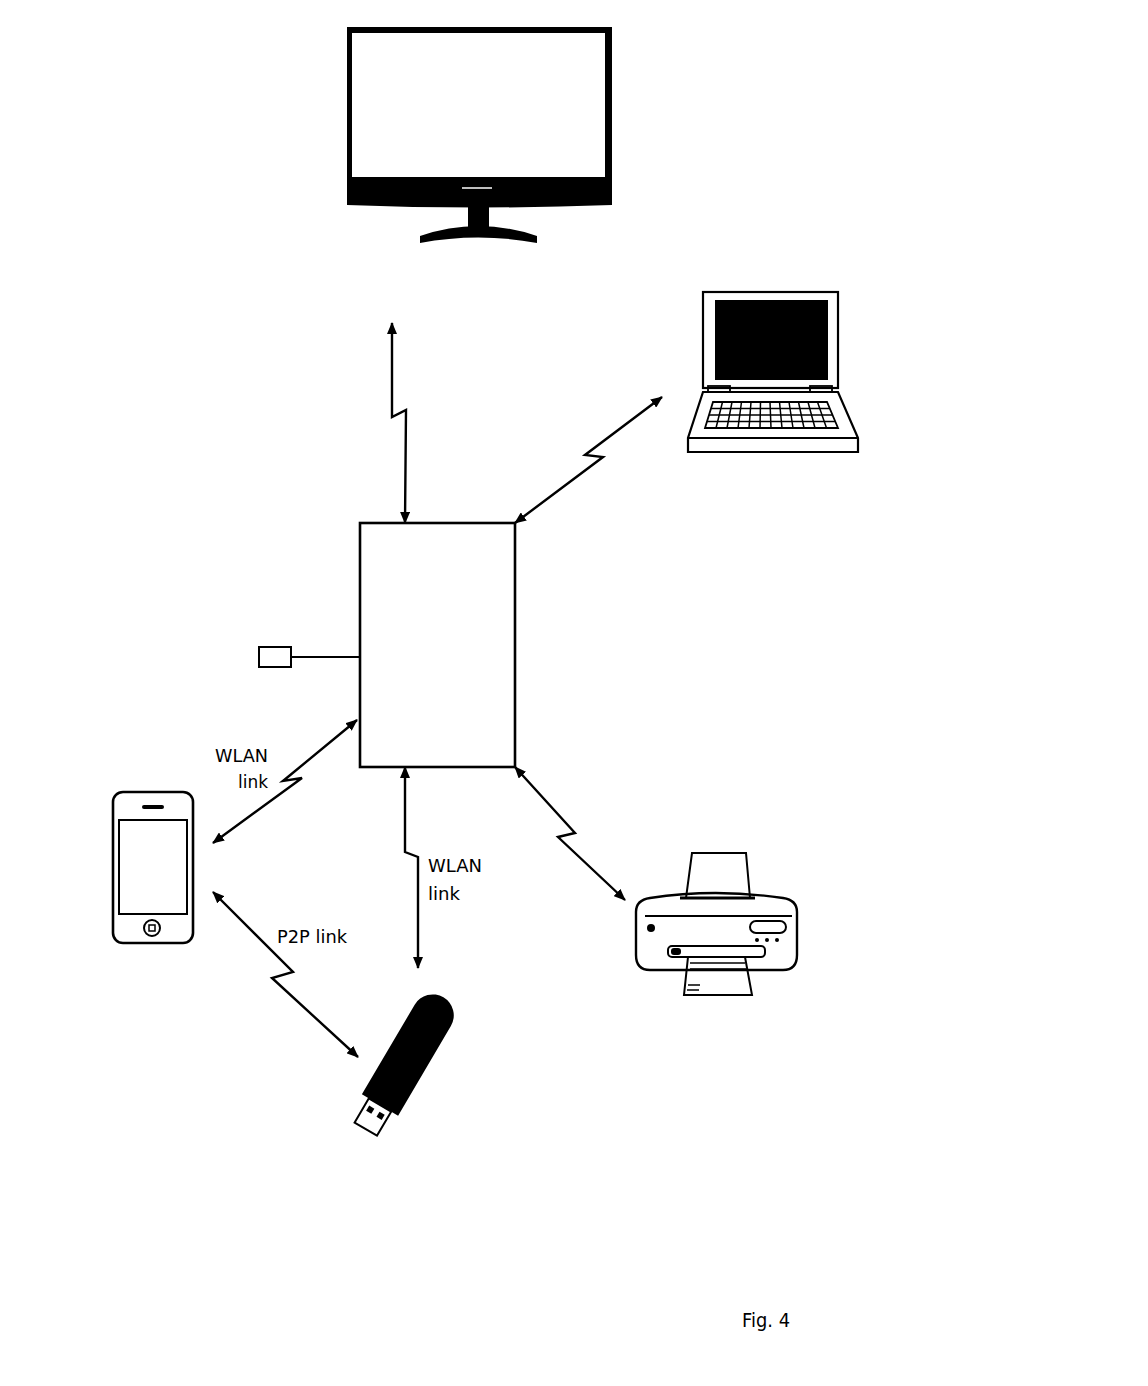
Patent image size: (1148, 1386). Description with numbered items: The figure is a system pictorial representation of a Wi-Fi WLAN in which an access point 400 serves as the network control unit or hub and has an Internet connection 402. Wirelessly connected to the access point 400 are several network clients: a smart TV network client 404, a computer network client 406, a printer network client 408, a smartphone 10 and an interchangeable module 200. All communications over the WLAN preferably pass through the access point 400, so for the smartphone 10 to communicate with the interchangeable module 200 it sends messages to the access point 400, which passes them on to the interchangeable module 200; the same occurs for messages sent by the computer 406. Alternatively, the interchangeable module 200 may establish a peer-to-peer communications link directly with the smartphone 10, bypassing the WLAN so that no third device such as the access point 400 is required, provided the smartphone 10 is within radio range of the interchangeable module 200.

The smartphone 10 is at (135, 790).
The interchangeable module 200 is at (455, 987).
The access point 400 is at (362, 522).
The Internet connection 402 is at (259, 667).
The network client (smart TV) 404 is at (598, 27).
The network client (computer) 406 is at (823, 292).
The network client (printer) 408 is at (792, 912).